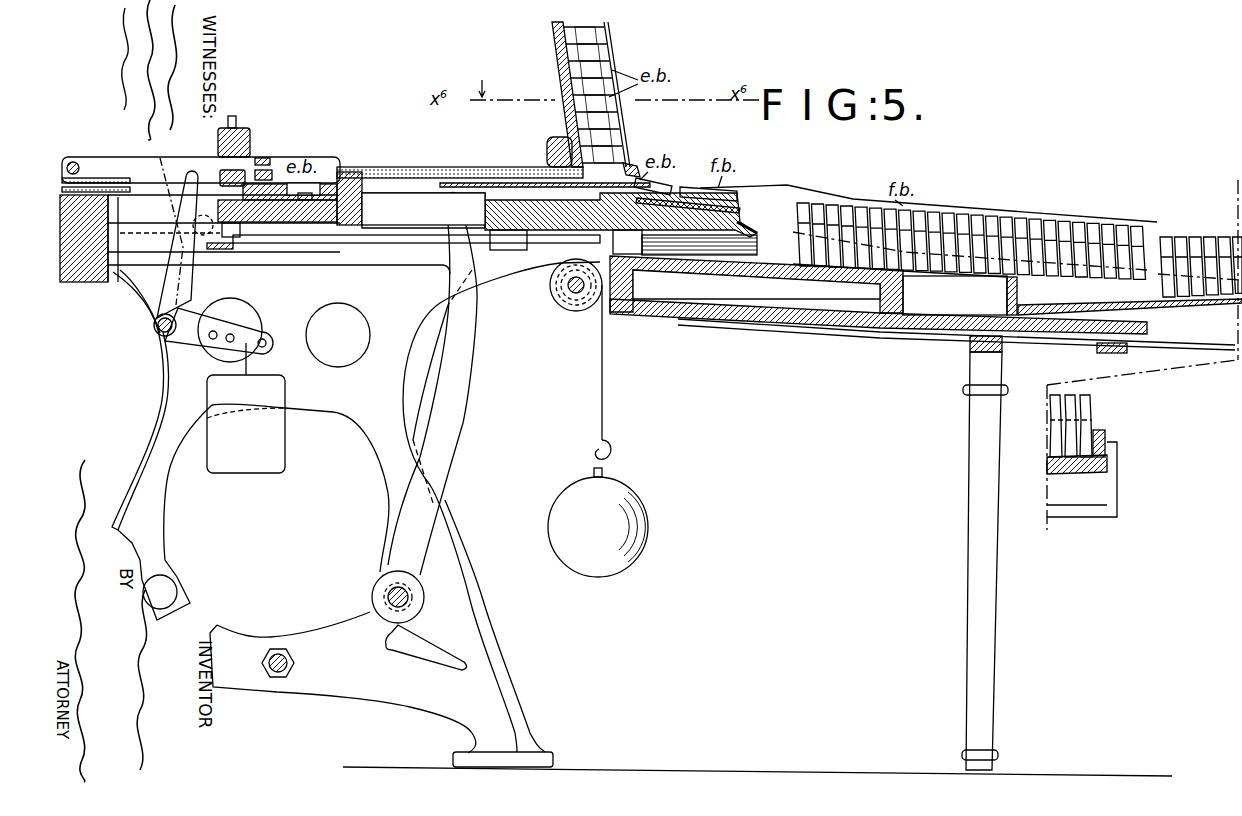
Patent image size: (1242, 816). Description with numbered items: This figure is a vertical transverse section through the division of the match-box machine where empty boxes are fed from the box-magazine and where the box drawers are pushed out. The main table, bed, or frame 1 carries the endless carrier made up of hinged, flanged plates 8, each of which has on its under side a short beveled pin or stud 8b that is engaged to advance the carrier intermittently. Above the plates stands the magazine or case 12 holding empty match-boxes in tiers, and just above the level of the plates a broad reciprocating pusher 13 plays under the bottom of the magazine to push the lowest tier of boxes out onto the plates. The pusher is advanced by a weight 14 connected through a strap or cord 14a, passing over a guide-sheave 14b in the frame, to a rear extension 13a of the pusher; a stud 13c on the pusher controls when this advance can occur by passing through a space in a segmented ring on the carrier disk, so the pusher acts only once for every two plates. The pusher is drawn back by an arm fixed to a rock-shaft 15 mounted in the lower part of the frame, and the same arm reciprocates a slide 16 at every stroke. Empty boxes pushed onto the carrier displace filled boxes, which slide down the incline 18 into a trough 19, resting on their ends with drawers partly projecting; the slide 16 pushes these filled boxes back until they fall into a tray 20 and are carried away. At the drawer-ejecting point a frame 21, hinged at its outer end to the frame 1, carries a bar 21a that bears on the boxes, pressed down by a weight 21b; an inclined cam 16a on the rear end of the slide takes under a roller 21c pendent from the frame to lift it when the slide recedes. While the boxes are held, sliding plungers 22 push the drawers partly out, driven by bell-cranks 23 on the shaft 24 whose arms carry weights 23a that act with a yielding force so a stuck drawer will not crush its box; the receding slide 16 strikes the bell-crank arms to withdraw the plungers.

The main table, bed, or frame 1 is at (85, 232).
The plates 8 is at (287, 200).
The beveled pin or stud 8b is at (307, 197).
The magazine or case 12 is at (563, 85).
The pusher 13 is at (490, 183).
The rear extension of the pusher 13a is at (397, 243).
The stud 13c is at (432, 384).
The weight 14 is at (598, 522).
The strap or cord 14a is at (602, 370).
The guide-sheave 14b is at (565, 296).
The rock-shaft 15 is at (385, 593).
The slide 16 is at (441, 218).
The inclined cam 16a is at (238, 248).
The incline 18 is at (747, 227).
The trough 19 is at (925, 270).
The tray 20 is at (1165, 304).
The frame 21 is at (187, 160).
The bar 21a is at (272, 165).
The weight 21b is at (248, 128).
The roller 21c is at (208, 237).
The sliding plungers 22 is at (168, 186).
The bell-cranks 23 is at (176, 300).
The weights 23a is at (246, 424).
The shaft 24 is at (155, 333).